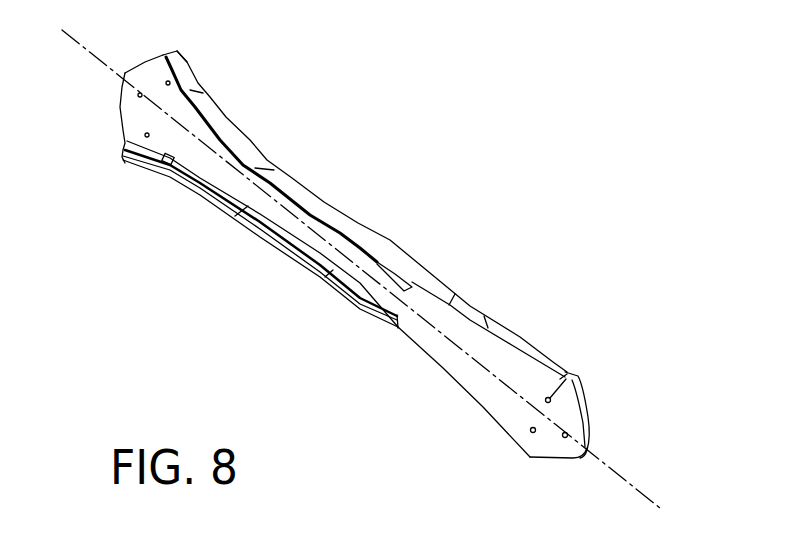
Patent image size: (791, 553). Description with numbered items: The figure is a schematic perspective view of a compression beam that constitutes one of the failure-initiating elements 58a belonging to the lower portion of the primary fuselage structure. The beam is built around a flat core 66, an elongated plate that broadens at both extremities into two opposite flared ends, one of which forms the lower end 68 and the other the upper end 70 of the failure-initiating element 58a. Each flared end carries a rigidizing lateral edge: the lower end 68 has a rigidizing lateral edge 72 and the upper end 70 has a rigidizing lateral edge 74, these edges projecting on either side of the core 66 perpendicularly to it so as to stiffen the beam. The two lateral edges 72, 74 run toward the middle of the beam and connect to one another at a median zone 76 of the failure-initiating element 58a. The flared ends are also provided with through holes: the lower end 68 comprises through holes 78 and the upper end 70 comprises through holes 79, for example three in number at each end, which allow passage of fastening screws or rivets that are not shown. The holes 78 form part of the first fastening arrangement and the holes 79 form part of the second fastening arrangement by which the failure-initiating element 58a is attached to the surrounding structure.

The failure-initiating element 58a is at (361, 267).
The flat core 66 is at (447, 365).
The lower end 68 is at (553, 448).
The upper end 70 is at (133, 117).
The rigidizing lateral edge 72 is at (520, 345).
The rigidizing lateral edge 74 is at (217, 117).
The median zone 76 is at (355, 230).
The through holes 78 is at (568, 374).
The through holes 79 is at (170, 83).